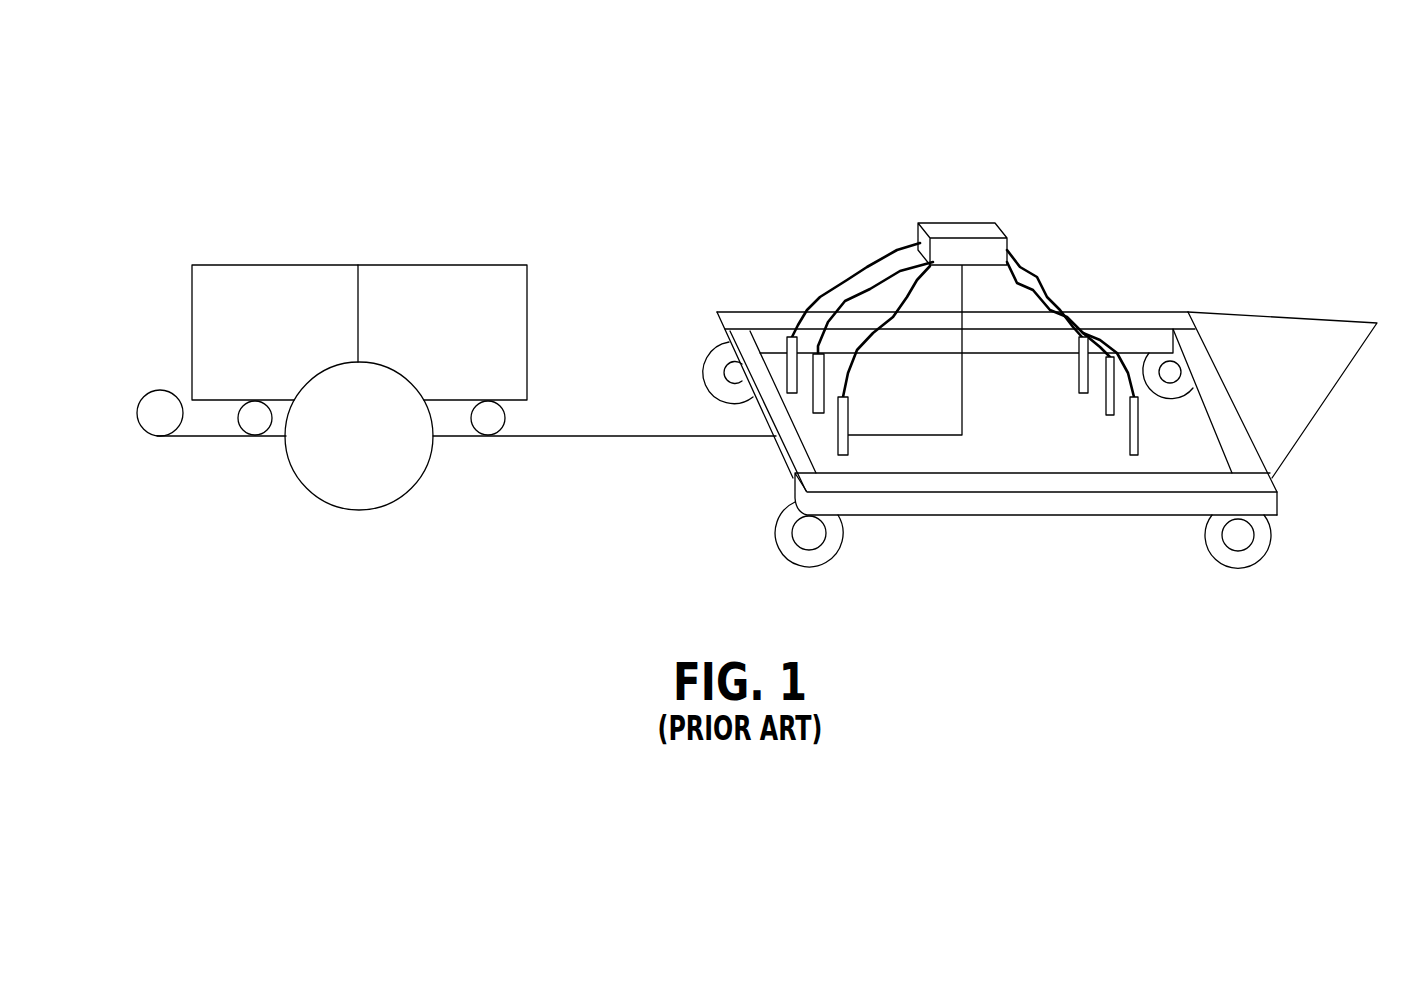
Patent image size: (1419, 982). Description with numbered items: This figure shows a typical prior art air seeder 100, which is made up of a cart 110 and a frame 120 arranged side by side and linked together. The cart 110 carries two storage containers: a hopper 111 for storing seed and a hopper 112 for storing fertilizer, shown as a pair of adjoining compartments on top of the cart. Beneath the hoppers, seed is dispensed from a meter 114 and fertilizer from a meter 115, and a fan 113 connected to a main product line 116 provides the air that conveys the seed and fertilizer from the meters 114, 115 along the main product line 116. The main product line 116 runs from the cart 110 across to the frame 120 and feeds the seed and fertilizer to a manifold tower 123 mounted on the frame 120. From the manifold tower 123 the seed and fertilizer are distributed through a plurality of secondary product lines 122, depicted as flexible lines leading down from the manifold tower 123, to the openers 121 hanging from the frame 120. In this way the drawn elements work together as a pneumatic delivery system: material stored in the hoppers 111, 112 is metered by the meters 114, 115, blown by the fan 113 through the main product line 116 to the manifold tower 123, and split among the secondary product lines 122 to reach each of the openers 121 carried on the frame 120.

The air seeder 100 is at (691, 108).
The cart 110 is at (387, 228).
The hopper 111 is at (250, 278).
The hopper 112 is at (453, 282).
The fan 113 is at (143, 423).
The meter 114 is at (248, 423).
The meter 115 is at (492, 423).
The main product line 116 is at (605, 445).
The frame 120 is at (1145, 311).
The openers 121 is at (792, 393).
The secondary product lines 122 is at (910, 305).
The manifold tower 123 is at (965, 224).